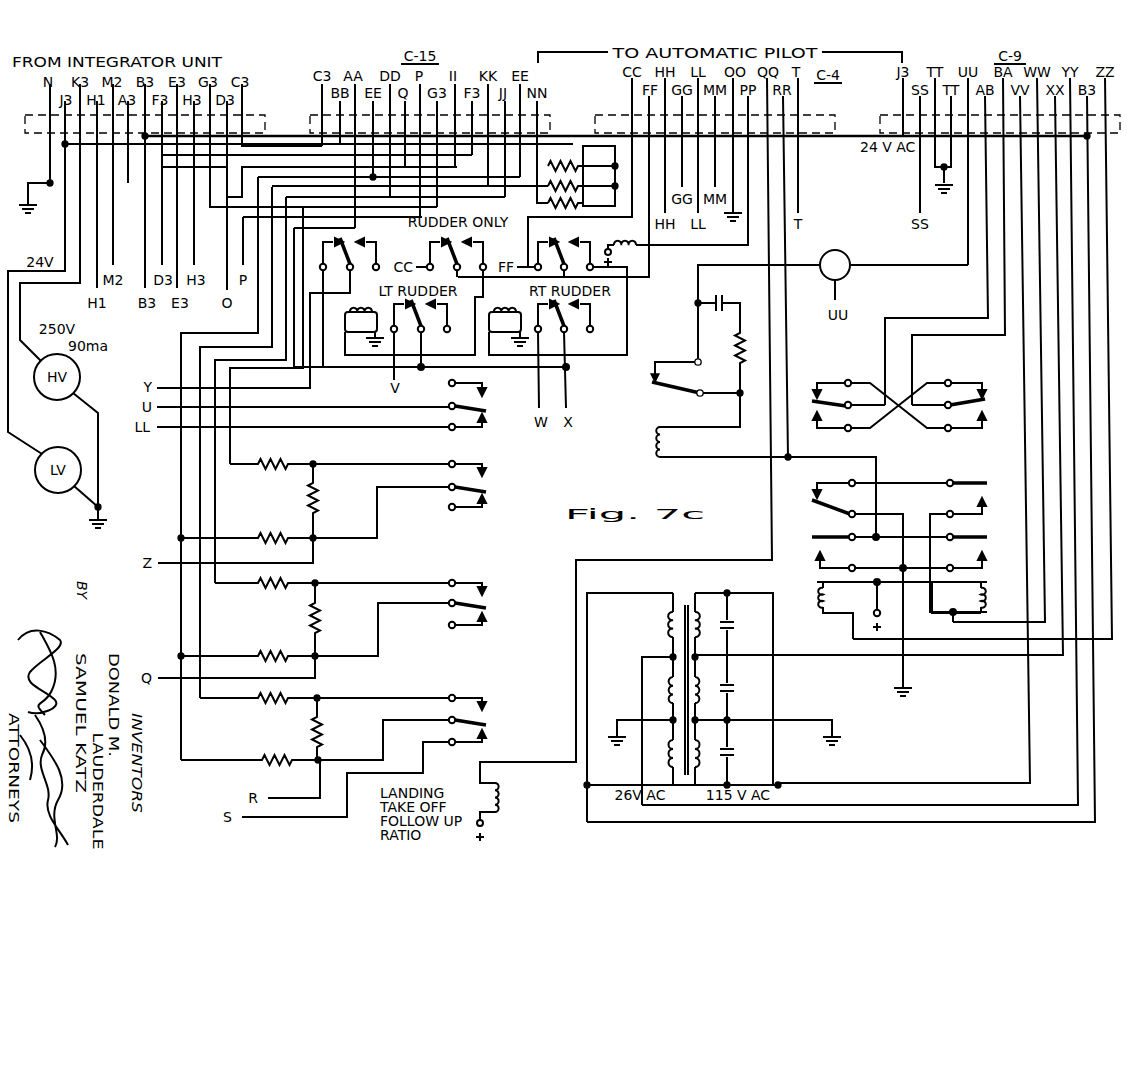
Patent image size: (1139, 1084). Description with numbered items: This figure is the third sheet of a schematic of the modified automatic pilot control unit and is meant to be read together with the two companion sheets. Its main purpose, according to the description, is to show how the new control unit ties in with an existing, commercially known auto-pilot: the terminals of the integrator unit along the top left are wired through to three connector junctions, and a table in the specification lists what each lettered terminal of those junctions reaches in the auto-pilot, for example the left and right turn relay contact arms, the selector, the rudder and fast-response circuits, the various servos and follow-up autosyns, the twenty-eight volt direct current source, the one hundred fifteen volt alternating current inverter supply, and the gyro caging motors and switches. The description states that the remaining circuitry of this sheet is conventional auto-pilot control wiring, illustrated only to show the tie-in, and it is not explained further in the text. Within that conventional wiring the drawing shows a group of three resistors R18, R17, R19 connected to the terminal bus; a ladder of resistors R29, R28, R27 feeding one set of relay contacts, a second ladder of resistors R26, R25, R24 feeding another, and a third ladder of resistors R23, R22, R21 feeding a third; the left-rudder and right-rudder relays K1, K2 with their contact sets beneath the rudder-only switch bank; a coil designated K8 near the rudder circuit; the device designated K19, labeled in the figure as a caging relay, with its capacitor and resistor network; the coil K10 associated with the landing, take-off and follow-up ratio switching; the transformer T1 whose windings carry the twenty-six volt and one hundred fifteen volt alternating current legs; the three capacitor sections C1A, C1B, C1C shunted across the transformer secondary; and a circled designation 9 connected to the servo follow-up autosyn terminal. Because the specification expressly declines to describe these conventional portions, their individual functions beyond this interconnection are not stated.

The resistor R18 is at (581, 158).
The resistor R17 is at (581, 178).
The resistor R19 is at (581, 197).
The resistor R29 is at (271, 473).
The resistor R28 is at (329, 501).
The resistor R27 is at (247, 530).
The resistor R26 is at (265, 591).
The resistor R25 is at (331, 619).
The resistor R24 is at (248, 648).
The resistor R23 is at (258, 706).
The resistor R22 is at (333, 729).
The resistor R21 is at (249, 751).
The left rudder relay K1 is at (397, 340).
The right rudder relay K2 is at (541, 354).
The relay coil K8 is at (676, 243).
The caging relay K19 is at (764, 376).
The landing/take-off follow-up ratio relay K10 is at (504, 801).
The transformer T1 is at (684, 680).
The capacitor section A C1A is at (742, 625).
The capacitor section B C1B is at (742, 688).
The capacitor section C C1C is at (742, 752).
The connector terminal 9 is at (835, 265).